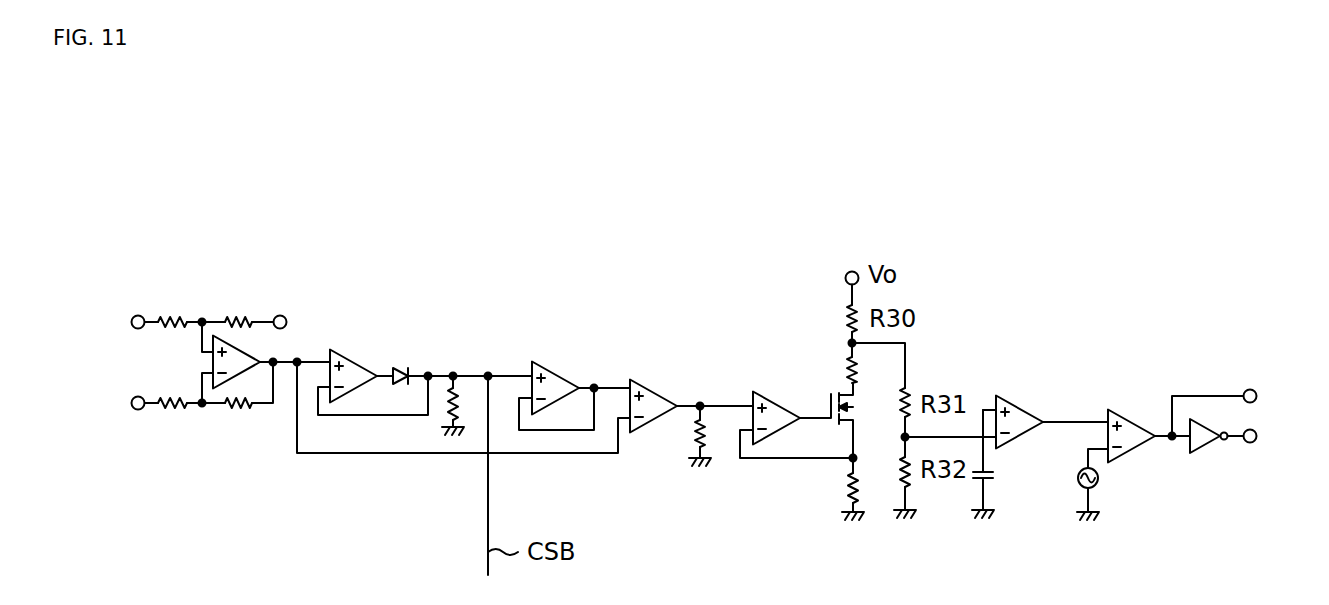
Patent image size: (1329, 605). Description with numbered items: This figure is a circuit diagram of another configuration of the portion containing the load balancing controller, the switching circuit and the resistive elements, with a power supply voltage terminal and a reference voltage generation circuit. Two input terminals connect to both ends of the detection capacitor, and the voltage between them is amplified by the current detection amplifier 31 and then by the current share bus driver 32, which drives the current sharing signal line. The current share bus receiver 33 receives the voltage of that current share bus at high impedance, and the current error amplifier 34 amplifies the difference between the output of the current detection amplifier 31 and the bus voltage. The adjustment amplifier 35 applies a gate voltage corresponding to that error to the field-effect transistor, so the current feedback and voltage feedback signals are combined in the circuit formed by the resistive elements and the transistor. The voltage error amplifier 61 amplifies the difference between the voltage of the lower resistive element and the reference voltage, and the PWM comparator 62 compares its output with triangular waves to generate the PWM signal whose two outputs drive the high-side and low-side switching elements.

The current detection amplifier 31 is at (152, 427).
The current share bus driver 32 is at (315, 469).
The current share bus receiver 33 is at (502, 469).
The current error amplifier 34 is at (612, 469).
The adjustment amplifier 35 is at (736, 469).
The voltage error amplifier 61 is at (1065, 528).
The PWM comparator 62 is at (1189, 528).